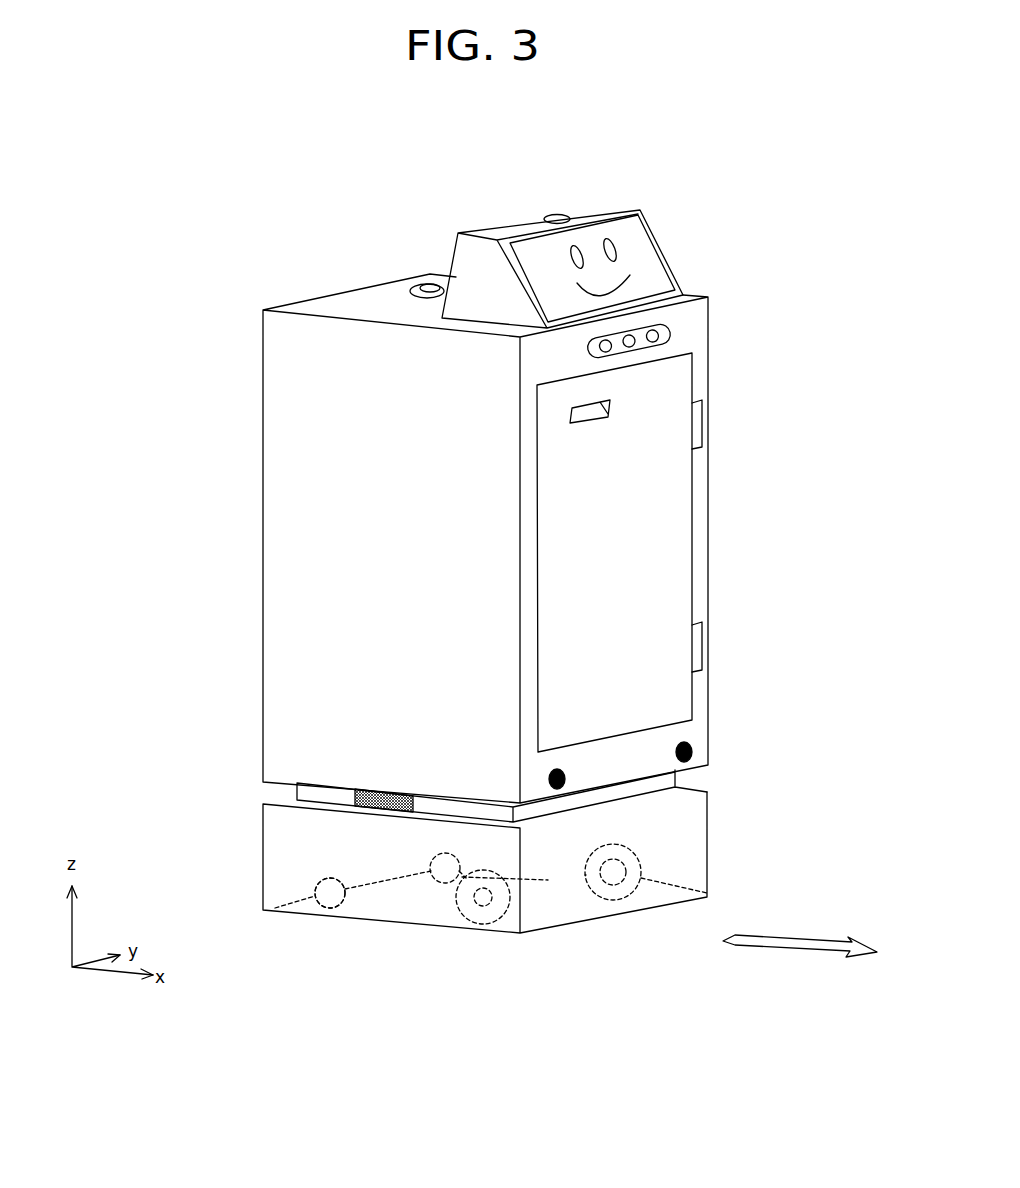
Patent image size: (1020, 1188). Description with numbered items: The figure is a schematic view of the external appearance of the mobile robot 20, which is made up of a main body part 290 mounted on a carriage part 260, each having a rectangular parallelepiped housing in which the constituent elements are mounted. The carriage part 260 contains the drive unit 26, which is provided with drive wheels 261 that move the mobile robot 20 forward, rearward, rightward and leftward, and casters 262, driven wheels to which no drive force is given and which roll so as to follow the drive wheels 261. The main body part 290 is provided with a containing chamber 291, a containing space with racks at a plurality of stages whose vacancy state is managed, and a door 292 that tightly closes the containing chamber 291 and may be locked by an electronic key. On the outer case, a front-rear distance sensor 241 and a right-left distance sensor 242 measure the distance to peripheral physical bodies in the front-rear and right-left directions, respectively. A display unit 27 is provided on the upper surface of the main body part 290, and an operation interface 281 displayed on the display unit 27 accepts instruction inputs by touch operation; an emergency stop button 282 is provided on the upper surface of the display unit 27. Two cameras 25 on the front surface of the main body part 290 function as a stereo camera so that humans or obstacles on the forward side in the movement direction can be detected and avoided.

The mobile robot 20 is at (237, 352).
The display unit 27 is at (637, 228).
The emergency stop button 282 is at (556, 215).
The operation interface 281 is at (647, 287).
The front-rear distance sensor 241 is at (660, 333).
The main body part 290 is at (275, 587).
The containing chamber 291 is at (706, 585).
The door 292 is at (657, 503).
The camera 25 is at (553, 770).
The right-left distance sensor 242 is at (353, 798).
The drive unit 26 is at (677, 855).
The carriage part 260 is at (280, 868).
The caster 262 is at (317, 883).
The drive wheel 261 is at (647, 857).